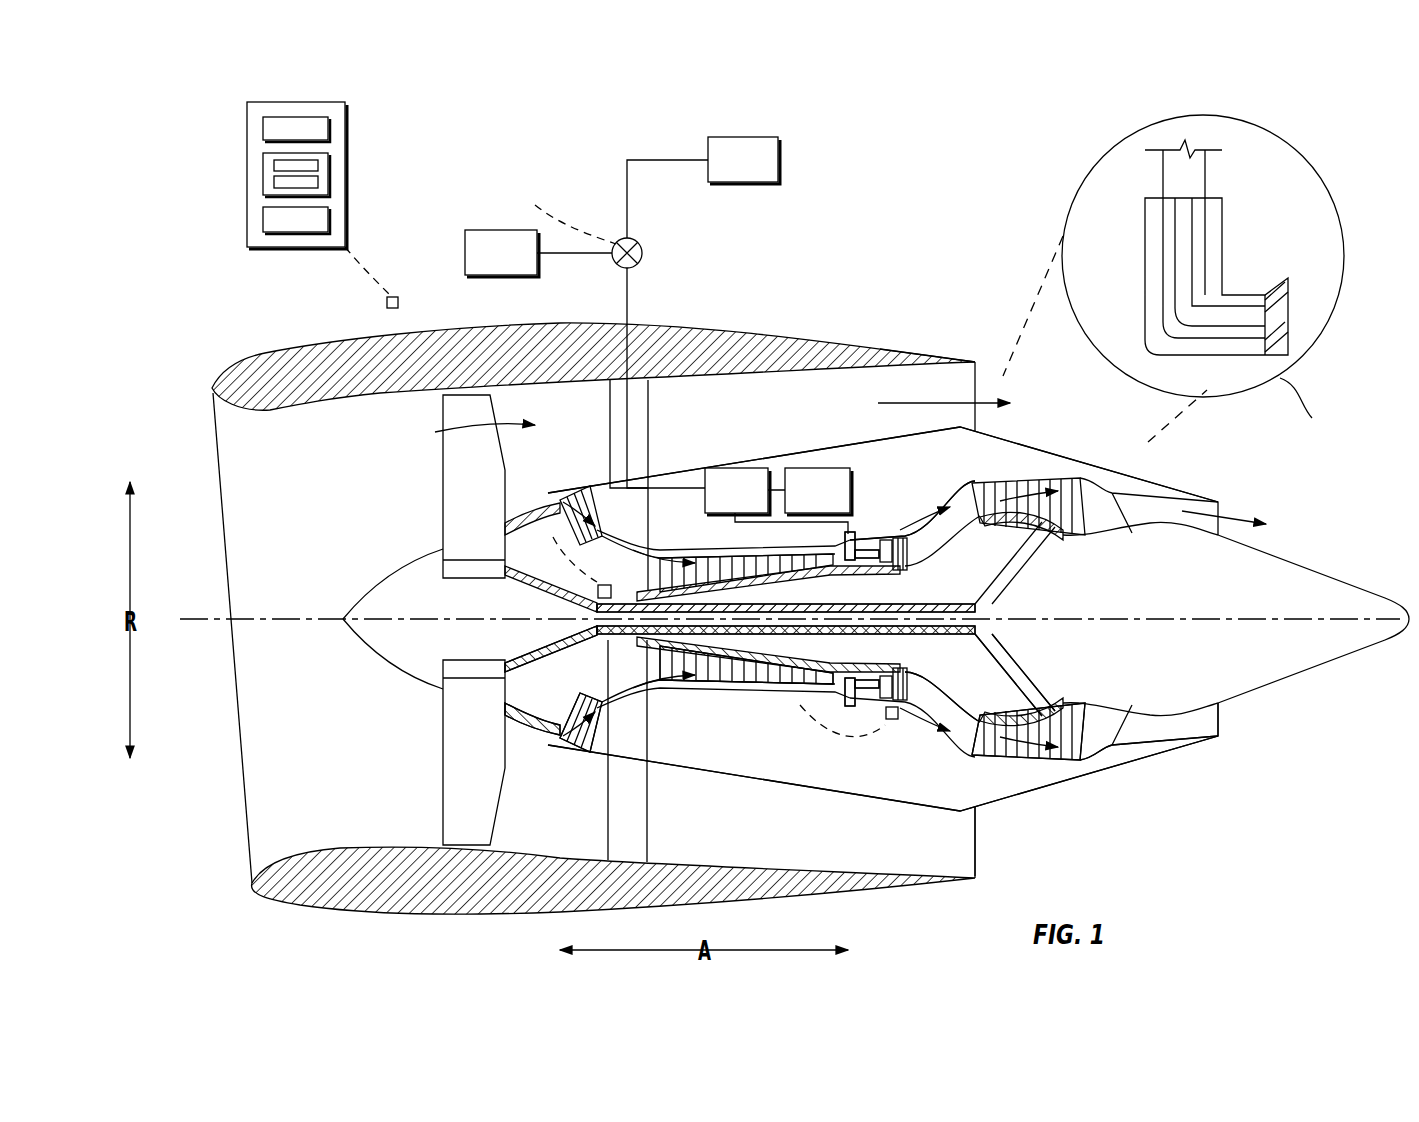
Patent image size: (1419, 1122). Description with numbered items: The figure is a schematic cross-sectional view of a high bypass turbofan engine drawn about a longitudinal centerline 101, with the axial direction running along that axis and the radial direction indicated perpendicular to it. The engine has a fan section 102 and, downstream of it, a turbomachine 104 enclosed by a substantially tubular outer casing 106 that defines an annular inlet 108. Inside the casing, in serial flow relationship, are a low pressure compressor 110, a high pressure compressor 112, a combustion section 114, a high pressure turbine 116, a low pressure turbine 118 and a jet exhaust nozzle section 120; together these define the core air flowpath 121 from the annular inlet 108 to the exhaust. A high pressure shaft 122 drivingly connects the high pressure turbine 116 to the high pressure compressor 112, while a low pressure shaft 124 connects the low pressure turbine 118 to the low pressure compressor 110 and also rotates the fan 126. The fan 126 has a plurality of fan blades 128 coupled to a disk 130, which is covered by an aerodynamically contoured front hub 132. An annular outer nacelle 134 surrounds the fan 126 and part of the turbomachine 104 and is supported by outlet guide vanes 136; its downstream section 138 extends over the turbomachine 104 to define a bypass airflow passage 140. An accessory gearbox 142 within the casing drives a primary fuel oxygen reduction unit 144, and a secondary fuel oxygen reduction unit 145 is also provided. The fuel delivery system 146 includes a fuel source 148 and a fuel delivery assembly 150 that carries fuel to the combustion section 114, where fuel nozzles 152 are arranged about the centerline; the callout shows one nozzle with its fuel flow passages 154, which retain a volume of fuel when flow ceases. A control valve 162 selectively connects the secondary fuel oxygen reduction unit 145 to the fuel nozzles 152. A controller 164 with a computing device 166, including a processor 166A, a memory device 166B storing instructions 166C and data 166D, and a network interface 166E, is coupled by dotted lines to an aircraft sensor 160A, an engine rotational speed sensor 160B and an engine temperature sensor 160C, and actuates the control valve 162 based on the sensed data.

The longitudinal centerline 101 is at (1188, 615).
The fan section 102 is at (395, 405).
The turbomachine 104 is at (766, 428).
The outer casing 106 is at (822, 795).
The annular inlet 108 is at (552, 735).
The low pressure compressor 110 is at (585, 750).
The high pressure compressor 112 is at (683, 683).
The combustion section 114 is at (856, 714).
The high pressure turbine 116 is at (935, 697).
The low pressure turbine 118 is at (1061, 765).
The jet exhaust nozzle section 120 is at (1128, 740).
The core air flowpath 121 is at (633, 700).
The high pressure shaft 122 is at (860, 540).
The low pressure shaft 124 is at (929, 602).
The fan 126 is at (380, 485).
The fan blades 128 is at (442, 792).
The disk 130 is at (457, 570).
The front hub 132 is at (340, 622).
The outer nacelle 134 is at (493, 915).
The outlet guide vanes 136 is at (647, 413).
The downstream section 138 is at (893, 350).
The bypass airflow passage 140 is at (862, 412).
The accessory gearbox 142 is at (833, 507).
The primary fuel oxygen reduction unit 144 is at (753, 507).
The secondary fuel oxygen reduction unit 145 is at (517, 268).
The fuel delivery system 146 is at (550, 193).
The fuel source 148 is at (760, 176).
The fuel delivery assembly 150 is at (630, 302).
The fuel nozzles 152 is at (855, 530).
The fuel flow passages 154 is at (1222, 290).
The aircraft sensor 160A is at (397, 298).
The engine rotational speed sensor 160B is at (607, 600).
The engine temperature sensor 160C is at (892, 722).
The control valve 162 is at (645, 250).
The controller 164 is at (368, 86).
The computing device 166 is at (278, 102).
The processor 166A is at (262, 128).
The memory device 166B is at (262, 172).
The instructions 166C is at (320, 165).
The data 166D is at (320, 182).
The network interface 166E is at (262, 217).